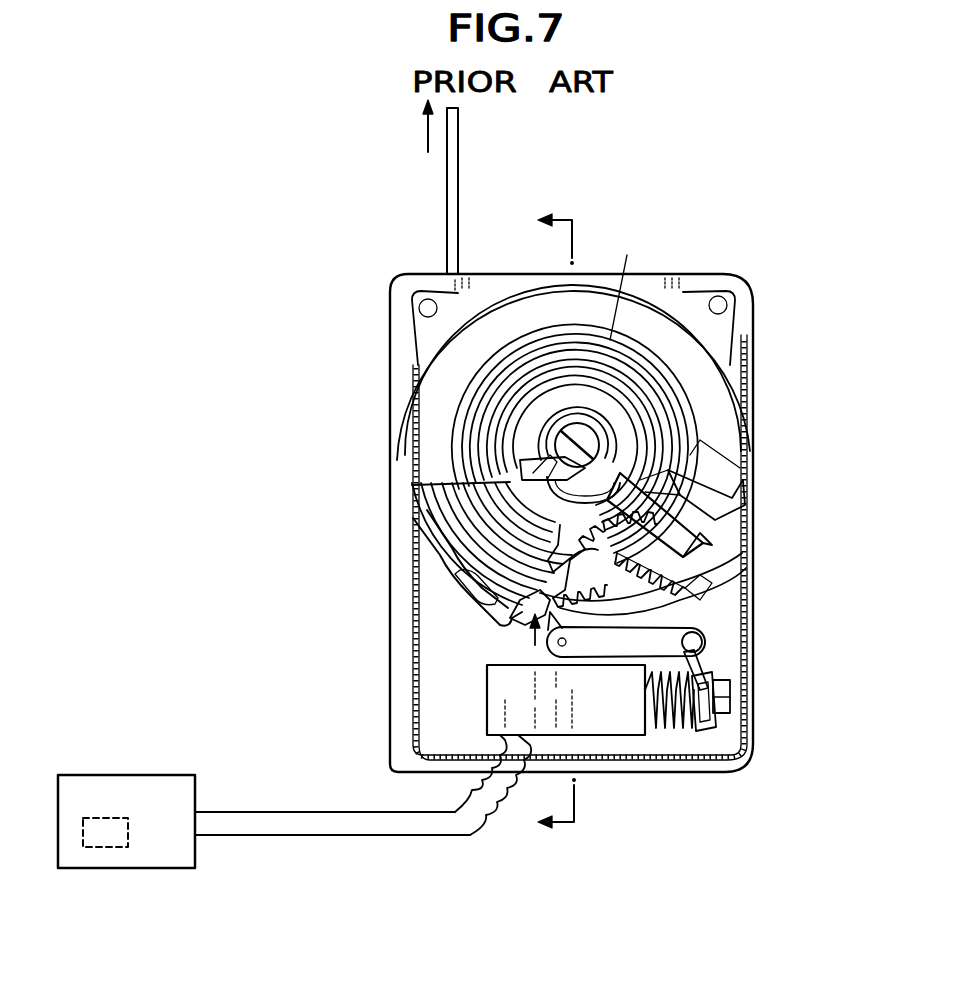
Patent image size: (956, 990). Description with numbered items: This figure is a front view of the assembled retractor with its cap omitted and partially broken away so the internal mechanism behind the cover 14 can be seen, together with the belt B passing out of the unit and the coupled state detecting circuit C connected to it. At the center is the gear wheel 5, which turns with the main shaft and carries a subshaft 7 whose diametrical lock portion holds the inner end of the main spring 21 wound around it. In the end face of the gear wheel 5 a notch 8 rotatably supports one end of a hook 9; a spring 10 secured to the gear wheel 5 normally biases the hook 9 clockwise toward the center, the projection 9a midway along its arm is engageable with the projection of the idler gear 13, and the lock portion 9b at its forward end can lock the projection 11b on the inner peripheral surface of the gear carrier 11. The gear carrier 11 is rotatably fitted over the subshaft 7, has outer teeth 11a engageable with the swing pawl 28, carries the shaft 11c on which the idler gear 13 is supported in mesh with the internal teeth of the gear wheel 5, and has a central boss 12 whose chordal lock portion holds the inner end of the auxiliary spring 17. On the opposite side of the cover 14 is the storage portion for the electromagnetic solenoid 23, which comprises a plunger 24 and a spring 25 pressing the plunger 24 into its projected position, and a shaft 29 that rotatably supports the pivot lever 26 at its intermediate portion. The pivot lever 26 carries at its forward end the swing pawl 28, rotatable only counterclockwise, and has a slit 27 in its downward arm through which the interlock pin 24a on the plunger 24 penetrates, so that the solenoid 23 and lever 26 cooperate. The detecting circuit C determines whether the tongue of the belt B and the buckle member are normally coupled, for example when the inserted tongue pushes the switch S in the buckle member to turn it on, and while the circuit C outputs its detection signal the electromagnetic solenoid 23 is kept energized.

The gear wheel 5 is at (452, 522).
The subshaft 7 is at (607, 420).
The notch 8 is at (556, 523).
The hook 9 is at (700, 478).
The projection 9a is at (700, 457).
The lock portion 9b is at (700, 605).
The spring 10 is at (700, 545).
The gear carrier 11 is at (700, 595).
The teeth 11a is at (705, 553).
The projection 11b is at (485, 617).
The shaft 11c is at (685, 455).
The boss 12 is at (540, 458).
The idler gear 13 is at (548, 478).
The cover 14 is at (405, 742).
The auxiliary spring 17 is at (442, 552).
The main spring 21 is at (575, 392).
The electromagnetic solenoid 23 is at (490, 690).
The plunger 24 is at (730, 700).
The interlock pin 24a is at (718, 720).
The spring 25 is at (672, 740).
The pivot lever 26 is at (632, 745).
The slit 27 is at (716, 740).
The swing pawl 28 is at (532, 643).
The shaft 29 is at (705, 648).
The belt B is at (447, 198).
The coupled state detecting circuit C is at (105, 778).
The switch S is at (125, 845).